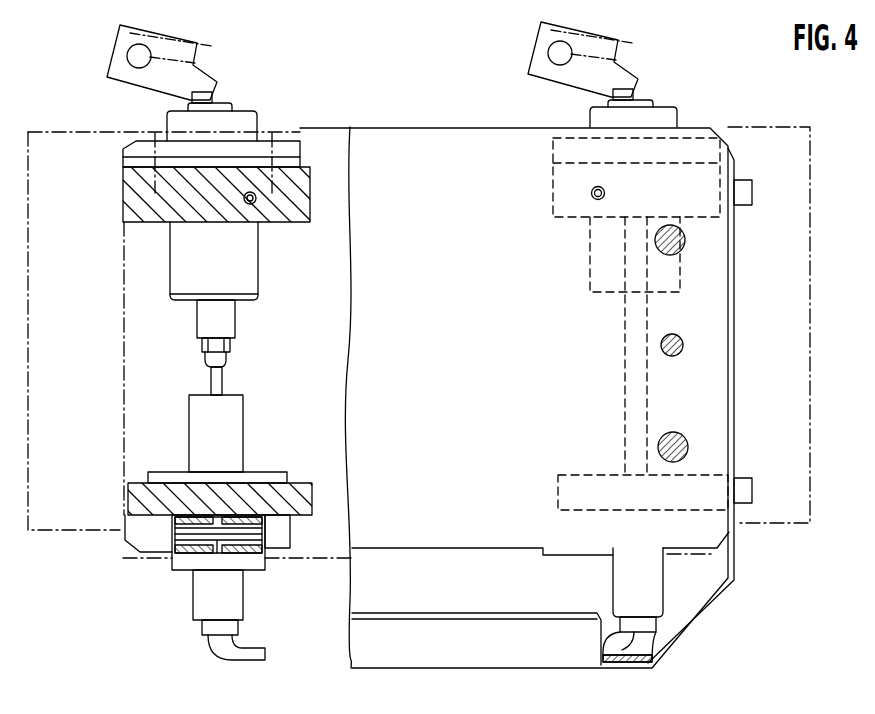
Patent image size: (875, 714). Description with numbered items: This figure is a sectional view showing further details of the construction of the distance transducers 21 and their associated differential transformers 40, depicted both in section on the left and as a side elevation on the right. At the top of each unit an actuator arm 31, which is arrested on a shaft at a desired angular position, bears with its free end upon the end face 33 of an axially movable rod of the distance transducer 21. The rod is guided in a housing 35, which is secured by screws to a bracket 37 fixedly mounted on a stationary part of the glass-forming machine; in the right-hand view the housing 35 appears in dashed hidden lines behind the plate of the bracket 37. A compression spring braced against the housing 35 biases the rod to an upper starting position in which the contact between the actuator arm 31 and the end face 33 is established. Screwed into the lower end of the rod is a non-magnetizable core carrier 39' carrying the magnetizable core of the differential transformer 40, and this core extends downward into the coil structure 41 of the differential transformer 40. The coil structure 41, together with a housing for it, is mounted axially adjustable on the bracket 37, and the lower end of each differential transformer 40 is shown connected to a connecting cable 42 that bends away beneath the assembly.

The distance transducer 21 is at (190, 323).
The actuator arm 31 is at (212, 46).
The end face 33 is at (232, 102).
The housing 35 is at (259, 268).
The bracket 37 is at (716, 270).
The core carrier 39' is at (241, 366).
The differential transformer 40 is at (183, 414).
The coil structure 41 is at (244, 438).
The connecting cable 42 is at (250, 650).